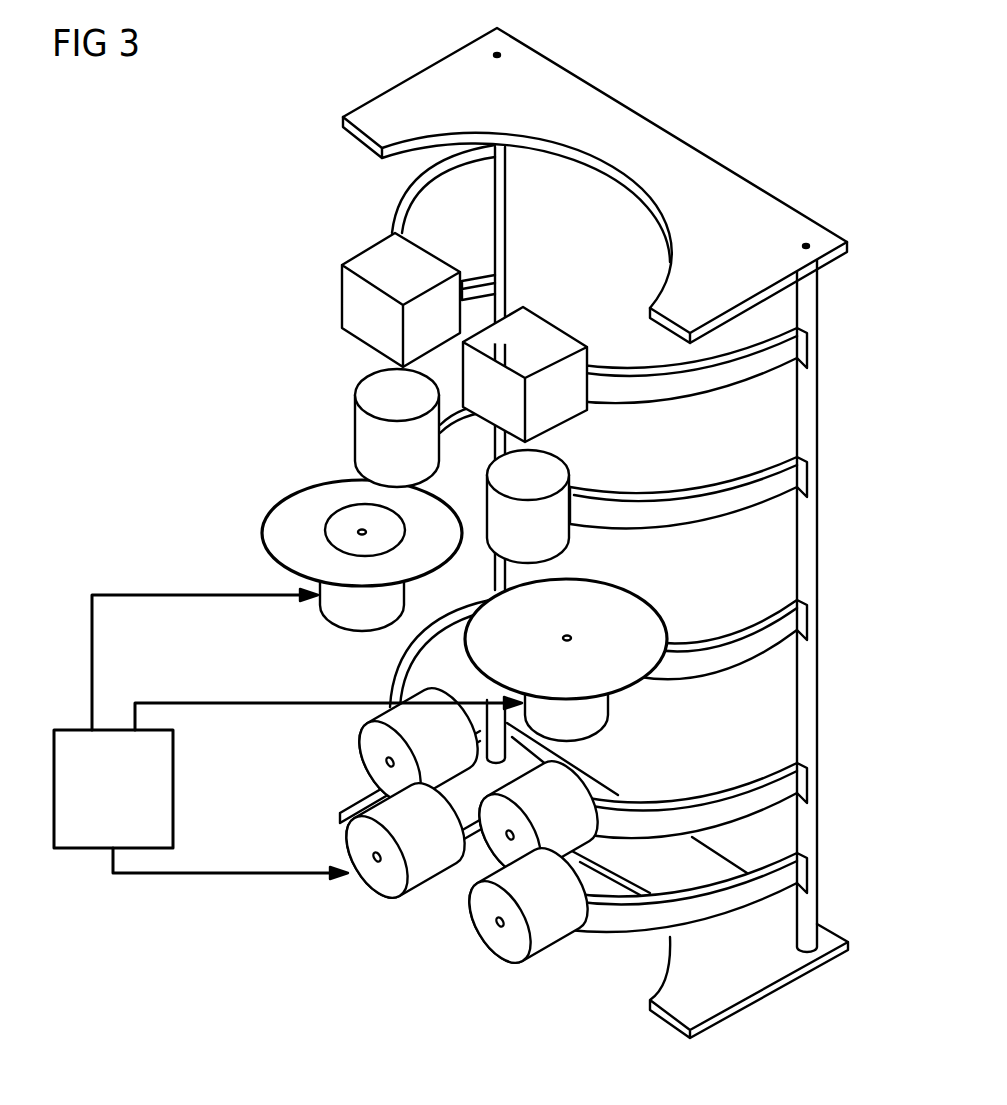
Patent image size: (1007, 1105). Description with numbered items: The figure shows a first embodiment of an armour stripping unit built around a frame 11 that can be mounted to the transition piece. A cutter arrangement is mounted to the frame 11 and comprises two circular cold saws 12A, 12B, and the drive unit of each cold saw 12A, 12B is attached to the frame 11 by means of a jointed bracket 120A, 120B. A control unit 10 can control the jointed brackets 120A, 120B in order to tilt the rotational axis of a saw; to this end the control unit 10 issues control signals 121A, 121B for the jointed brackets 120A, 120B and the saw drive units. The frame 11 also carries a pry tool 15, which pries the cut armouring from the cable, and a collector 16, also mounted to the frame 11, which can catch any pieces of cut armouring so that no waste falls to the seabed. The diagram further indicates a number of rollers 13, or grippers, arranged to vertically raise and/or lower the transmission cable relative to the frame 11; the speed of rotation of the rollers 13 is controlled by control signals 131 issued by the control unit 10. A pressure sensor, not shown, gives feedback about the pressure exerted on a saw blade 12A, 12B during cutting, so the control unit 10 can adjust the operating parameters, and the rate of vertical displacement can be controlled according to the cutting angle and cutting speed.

The control unit 10 is at (173, 792).
The frame 11 is at (766, 205).
The circular cold saw 12A is at (282, 512).
The circular cold saw 12B is at (643, 626).
The jointed bracket 120A is at (340, 620).
The jointed bracket 120B is at (595, 718).
The control signal 121A is at (155, 592).
The control signal 121B is at (175, 700).
The rollers 13 is at (480, 910).
The control signal 131 is at (175, 878).
The pry tool 15 is at (360, 418).
The collector 16 is at (350, 298).